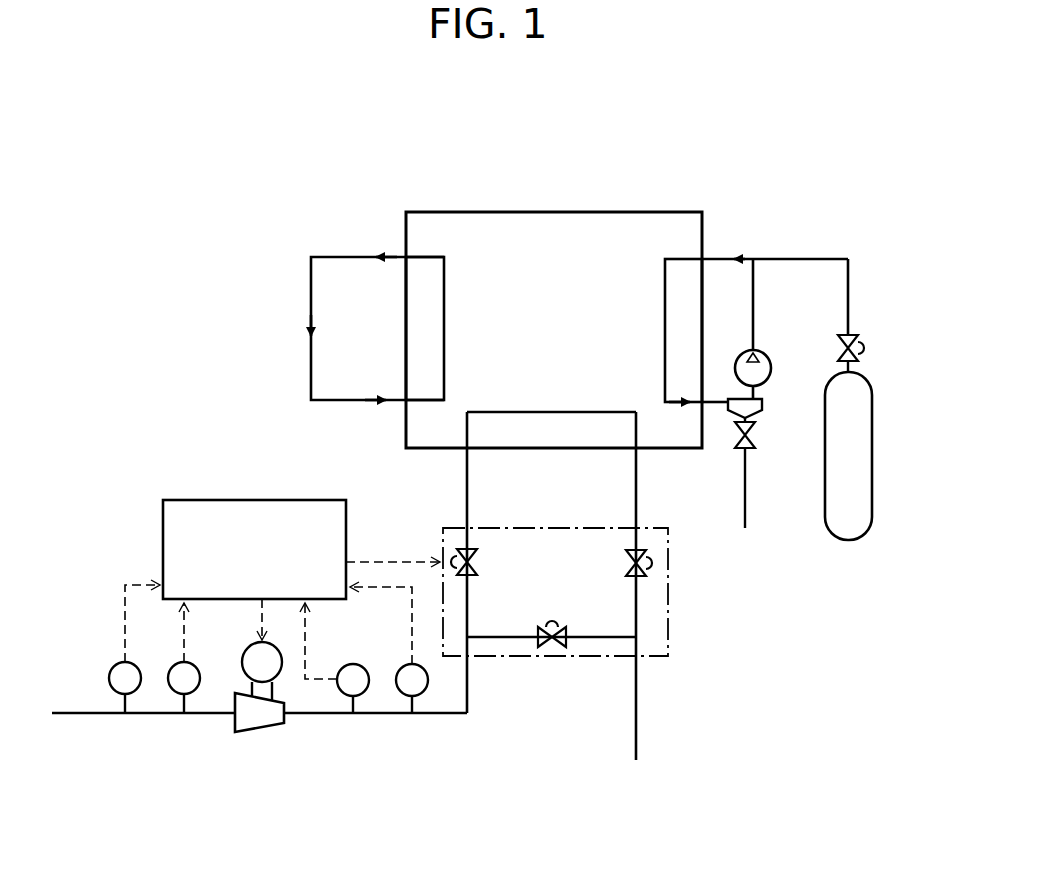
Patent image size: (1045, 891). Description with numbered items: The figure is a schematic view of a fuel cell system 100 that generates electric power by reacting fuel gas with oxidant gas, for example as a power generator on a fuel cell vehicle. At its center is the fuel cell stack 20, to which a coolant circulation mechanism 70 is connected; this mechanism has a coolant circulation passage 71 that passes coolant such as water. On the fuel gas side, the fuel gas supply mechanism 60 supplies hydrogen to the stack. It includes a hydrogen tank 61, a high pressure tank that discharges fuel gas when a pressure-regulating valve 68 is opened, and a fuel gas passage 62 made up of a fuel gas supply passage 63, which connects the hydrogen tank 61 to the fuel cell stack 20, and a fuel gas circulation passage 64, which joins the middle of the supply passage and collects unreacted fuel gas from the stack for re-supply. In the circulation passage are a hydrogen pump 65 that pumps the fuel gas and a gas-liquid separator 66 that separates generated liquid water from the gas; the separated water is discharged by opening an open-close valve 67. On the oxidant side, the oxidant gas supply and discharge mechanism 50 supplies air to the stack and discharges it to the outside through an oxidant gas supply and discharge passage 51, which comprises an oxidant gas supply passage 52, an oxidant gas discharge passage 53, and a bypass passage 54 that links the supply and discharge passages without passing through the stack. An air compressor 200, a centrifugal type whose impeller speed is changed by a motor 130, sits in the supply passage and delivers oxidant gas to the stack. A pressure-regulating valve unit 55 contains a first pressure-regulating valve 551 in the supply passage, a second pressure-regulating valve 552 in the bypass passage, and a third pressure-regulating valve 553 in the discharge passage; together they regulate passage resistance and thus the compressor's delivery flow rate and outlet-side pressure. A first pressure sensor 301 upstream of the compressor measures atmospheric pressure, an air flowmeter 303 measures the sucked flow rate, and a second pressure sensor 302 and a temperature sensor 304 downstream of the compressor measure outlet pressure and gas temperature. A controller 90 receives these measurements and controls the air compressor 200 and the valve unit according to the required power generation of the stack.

The fuel cell system 100 is at (751, 175).
The fuel cell stack 20 is at (536, 212).
The coolant circulation mechanism 70 is at (324, 243).
The coolant circulation passage 71 is at (338, 257).
The fuel gas supply mechanism 60 is at (870, 196).
The fuel gas passage 62 is at (822, 190).
The fuel gas supply passage 63 is at (742, 259).
The fuel gas circulation passage 64 is at (755, 297).
The hydrogen pump 65 is at (774, 372).
The gas-liquid separator 66 is at (762, 418).
The open-close valve 67 is at (757, 442).
The pressure-regulating valve 68 is at (855, 335).
The hydrogen tank 61 is at (870, 380).
The oxidant gas supply and discharge mechanism 50 is at (389, 795).
The oxidant gas supply and discharge passage 51 is at (622, 775).
The oxidant gas supply passage 52 is at (456, 714).
The oxidant gas discharge passage 53 is at (629, 688).
The bypass passage 54 is at (512, 640).
The pressure-regulating valve unit 55 is at (508, 528).
The first pressure-regulating valve 551 is at (477, 562).
The second pressure-regulating valve 552 is at (548, 628).
The third pressure-regulating valve 553 is at (628, 553).
The controller 90 is at (222, 500).
The first pressure sensor 301 is at (122, 662).
The second pressure sensor 302 is at (405, 664).
The air flowmeter 303 is at (183, 662).
The temperature sensor 304 is at (360, 665).
The motor 130 is at (246, 651).
The air compressor 200 is at (265, 725).